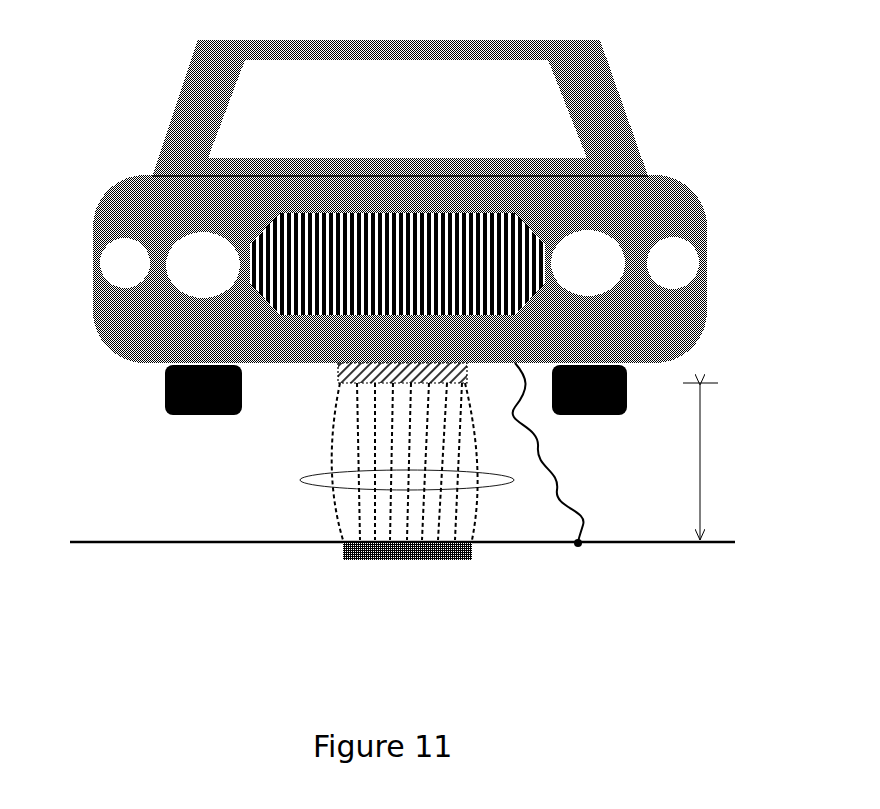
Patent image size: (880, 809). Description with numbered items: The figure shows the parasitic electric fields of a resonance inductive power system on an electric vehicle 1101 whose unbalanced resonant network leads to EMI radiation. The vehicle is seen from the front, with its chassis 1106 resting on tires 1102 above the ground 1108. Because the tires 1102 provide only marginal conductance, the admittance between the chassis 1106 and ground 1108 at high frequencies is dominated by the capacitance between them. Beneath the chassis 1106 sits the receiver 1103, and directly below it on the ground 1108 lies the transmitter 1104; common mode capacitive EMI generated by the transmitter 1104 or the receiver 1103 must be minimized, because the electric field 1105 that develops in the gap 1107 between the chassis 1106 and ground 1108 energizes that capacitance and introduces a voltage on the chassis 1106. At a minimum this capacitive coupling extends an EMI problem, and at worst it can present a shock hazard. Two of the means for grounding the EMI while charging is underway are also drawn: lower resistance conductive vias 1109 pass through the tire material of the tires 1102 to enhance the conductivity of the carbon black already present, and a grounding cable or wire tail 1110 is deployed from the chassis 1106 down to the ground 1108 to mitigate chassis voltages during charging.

The electric vehicle 1101 is at (409, 238).
The tires 1102 is at (322, 400).
The receiver 1103 is at (408, 370).
The transmitter 1104 is at (407, 563).
The electric field 1105 is at (300, 480).
The chassis 1106 is at (693, 343).
The gap 1107 is at (724, 461).
The ground 1108 is at (431, 550).
The conductive vias 1109 is at (200, 417).
The grounding cable or wire tail 1110 is at (563, 455).